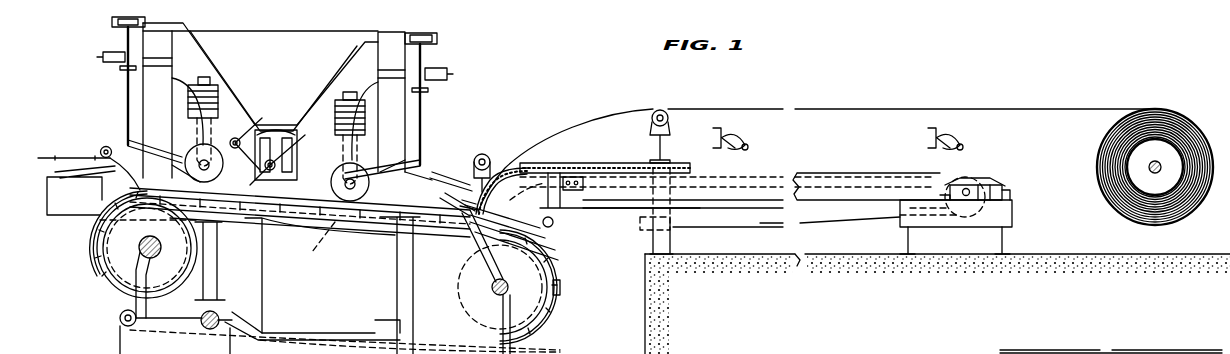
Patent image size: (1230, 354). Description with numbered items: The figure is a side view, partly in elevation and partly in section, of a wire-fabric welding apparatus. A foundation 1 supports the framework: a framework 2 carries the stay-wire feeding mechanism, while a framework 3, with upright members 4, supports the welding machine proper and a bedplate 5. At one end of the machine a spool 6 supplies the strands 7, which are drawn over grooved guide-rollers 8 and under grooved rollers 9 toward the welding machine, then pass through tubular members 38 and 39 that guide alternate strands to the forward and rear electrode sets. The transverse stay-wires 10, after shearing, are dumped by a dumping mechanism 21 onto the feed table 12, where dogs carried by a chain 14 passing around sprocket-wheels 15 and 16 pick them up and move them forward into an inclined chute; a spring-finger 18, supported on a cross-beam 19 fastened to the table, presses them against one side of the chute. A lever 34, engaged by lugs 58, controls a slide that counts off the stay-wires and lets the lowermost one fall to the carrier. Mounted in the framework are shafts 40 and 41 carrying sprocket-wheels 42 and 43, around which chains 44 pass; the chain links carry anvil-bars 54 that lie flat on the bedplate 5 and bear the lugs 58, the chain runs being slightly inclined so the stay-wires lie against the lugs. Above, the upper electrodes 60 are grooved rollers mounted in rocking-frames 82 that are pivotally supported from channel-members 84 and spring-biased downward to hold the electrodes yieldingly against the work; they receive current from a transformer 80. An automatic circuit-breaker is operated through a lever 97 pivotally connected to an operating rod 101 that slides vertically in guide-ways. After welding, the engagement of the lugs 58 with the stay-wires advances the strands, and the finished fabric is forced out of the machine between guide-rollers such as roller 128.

The foundation 1 is at (645, 338).
The framework 2 is at (672, 236).
The framework 3 is at (356, 336).
The upright members 4 is at (172, 72).
The bedplate 5 is at (300, 226).
The spools 6 is at (1100, 168).
The strands 7 is at (62, 170).
The grooved guide-rollers 8 is at (660, 110).
The grooved rollers 9 is at (482, 154).
The stay-wires 10 is at (78, 172).
The feed table 12 is at (822, 175).
The chain 14 is at (762, 175).
The sprocket-wheel 15 is at (548, 172).
The sprocket-wheel 16 is at (970, 183).
The spring-finger 18 is at (495, 170).
The cross-beam 19 is at (463, 201).
The dumping mechanism 21 is at (833, 134).
The lever 34 is at (548, 228).
The tubular members 38 is at (445, 178).
The tubular members 39 is at (432, 172).
The shaft 40 is at (140, 252).
The shaft 41 is at (492, 287).
The sprocket-wheel 42 is at (118, 232).
The sprocket-wheel 43 is at (548, 303).
The chains 44 is at (312, 252).
The anvil-bars 54 is at (268, 226).
The lugs 58 is at (560, 256).
The upper electrodes 60 is at (340, 258).
The transformer 80 is at (218, 100).
The rocking-frames 82 is at (242, 120).
The channel-members 84 is at (276, 150).
The lever 97 is at (128, 140).
The operating rod 101 is at (128, 88).
The guide-roller 128 is at (106, 146).